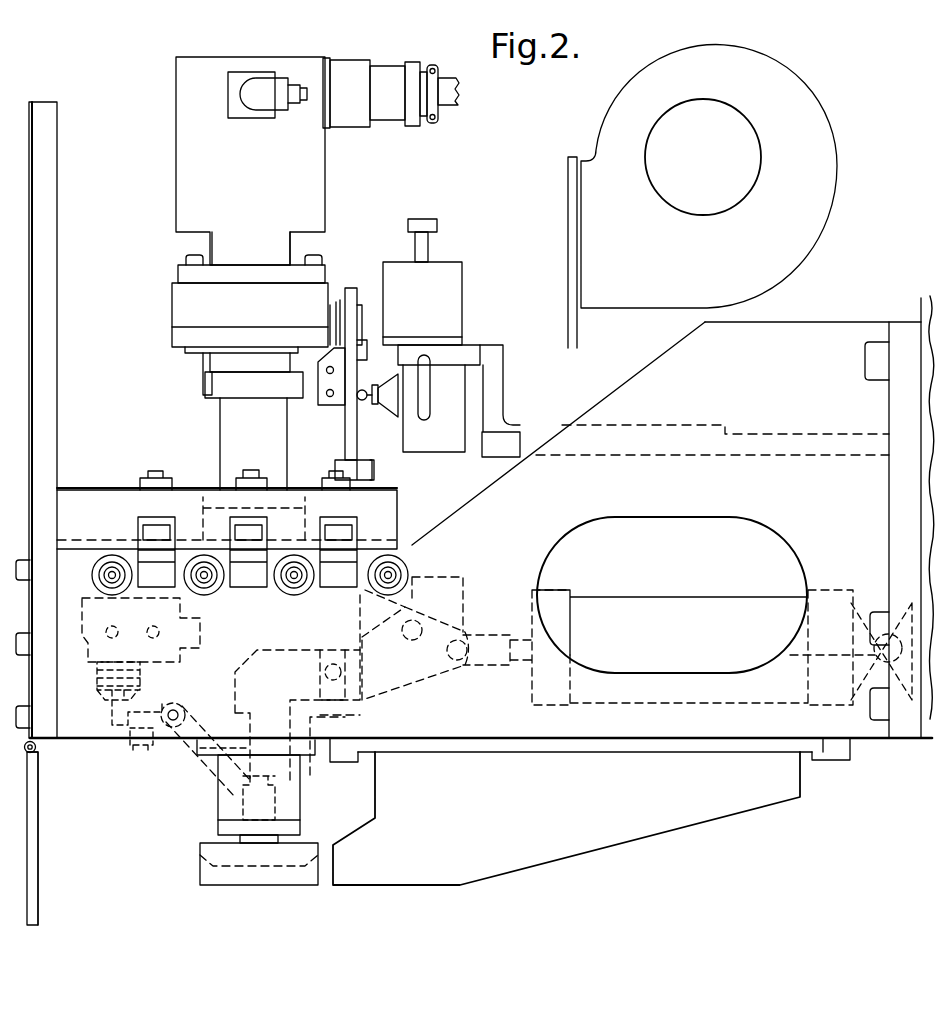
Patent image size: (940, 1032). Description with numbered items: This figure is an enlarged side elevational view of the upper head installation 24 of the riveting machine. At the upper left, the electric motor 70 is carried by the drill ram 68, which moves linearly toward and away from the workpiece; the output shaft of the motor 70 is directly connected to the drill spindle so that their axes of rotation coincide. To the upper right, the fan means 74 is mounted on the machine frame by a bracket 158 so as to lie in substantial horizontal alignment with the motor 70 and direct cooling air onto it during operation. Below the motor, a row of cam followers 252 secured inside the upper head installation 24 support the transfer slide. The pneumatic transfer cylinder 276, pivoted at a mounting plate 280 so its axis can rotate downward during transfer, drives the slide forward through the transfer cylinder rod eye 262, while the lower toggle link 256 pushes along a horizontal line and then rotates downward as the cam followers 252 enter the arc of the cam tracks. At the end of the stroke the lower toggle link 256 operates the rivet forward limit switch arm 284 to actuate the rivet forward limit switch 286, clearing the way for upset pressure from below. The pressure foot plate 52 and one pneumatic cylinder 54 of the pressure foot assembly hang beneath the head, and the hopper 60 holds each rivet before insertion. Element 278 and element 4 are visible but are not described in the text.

The upper head installation 24 is at (824, 279).
The fan means 74 is at (812, 104).
The bracket 158 is at (577, 338).
The electric motor 70 is at (176, 155).
The drill ram 68 is at (226, 412).
The cam followers 252 is at (108, 567).
The rivet forward limit switch 286 is at (140, 677).
The rivet forward limit switch arm 284 is at (185, 748).
The pneumatic cylinder 54 is at (218, 795).
The pressure foot plate 52 is at (200, 864).
The lower toggle link 256 is at (375, 693).
The transfer cylinder rod eye 262 is at (446, 651).
The link 278 is at (525, 643).
The pneumatic transfer cylinder 276 is at (690, 597).
The mounting plate 280 is at (800, 658).
The hopper 60 is at (562, 848).
The post 4 is at (19, 838).